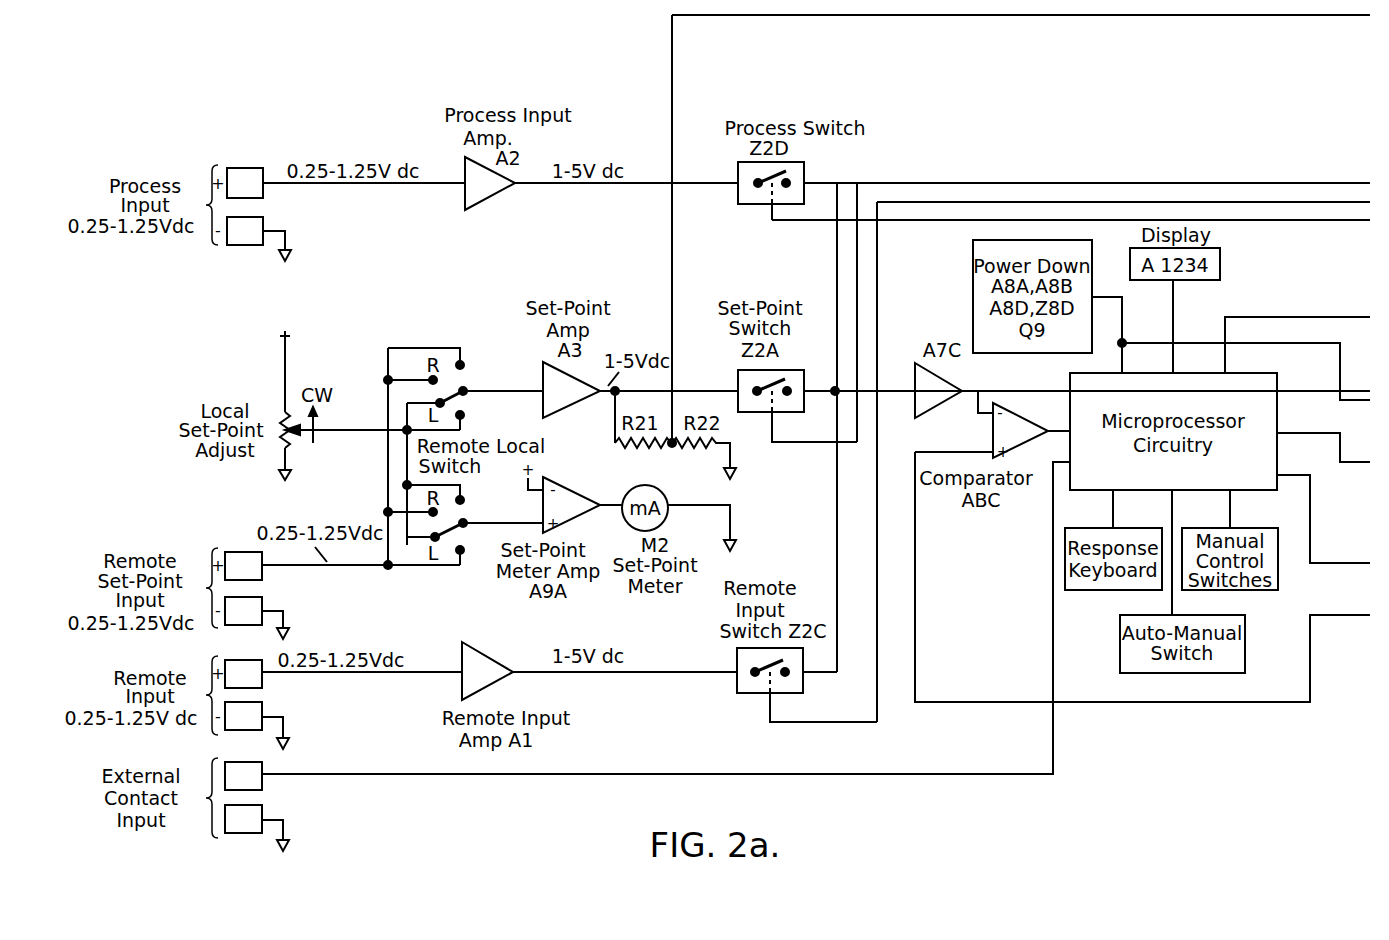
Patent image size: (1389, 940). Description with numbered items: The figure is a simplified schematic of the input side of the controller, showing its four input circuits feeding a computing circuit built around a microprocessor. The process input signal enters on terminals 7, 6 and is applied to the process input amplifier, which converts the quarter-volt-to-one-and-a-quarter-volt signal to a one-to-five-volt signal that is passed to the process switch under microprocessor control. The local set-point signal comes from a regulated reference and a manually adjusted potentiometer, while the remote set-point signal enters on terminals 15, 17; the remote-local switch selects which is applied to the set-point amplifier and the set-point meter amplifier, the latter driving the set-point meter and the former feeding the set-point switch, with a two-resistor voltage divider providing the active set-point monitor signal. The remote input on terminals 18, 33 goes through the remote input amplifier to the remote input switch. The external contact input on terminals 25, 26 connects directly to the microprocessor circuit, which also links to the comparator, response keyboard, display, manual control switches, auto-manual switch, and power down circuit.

The process input positive terminal 7 is at (245, 183).
The process input negative terminal 6 is at (259, 239).
The remote set-point input positive terminal 15 is at (243, 566).
The remote set-point input negative terminal 17 is at (257, 618).
The remote input positive terminal 18 is at (243, 674).
The remote input negative terminal 33 is at (257, 725).
The external contact input terminal 25 is at (243, 776).
The external contact input terminal 26 is at (257, 828).